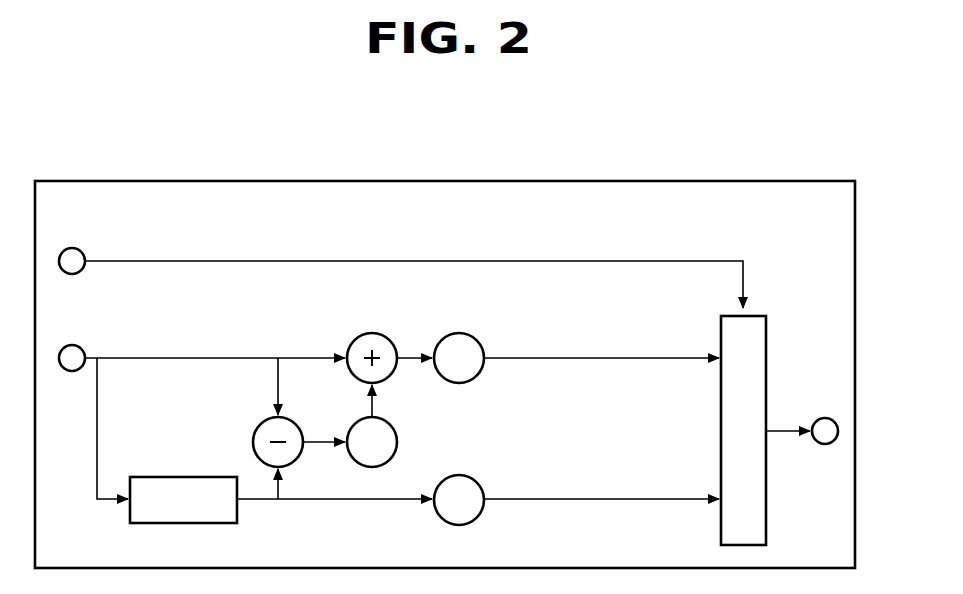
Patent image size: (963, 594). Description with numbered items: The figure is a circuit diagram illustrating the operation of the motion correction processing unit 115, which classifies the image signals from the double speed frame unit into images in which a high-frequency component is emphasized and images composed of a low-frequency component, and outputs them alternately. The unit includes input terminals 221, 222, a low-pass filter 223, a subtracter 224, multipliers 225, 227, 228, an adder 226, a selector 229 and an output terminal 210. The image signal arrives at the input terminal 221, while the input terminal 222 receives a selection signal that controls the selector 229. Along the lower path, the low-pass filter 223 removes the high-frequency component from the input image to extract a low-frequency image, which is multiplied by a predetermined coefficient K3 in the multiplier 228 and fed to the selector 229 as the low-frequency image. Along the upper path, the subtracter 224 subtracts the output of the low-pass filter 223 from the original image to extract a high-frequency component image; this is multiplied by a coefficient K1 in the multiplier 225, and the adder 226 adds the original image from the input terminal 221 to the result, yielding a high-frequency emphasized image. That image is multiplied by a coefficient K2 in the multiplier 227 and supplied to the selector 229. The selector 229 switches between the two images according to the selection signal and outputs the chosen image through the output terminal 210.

The motion correction processing unit 115 is at (826, 181).
The output terminal 210 is at (825, 418).
The input terminal 221 is at (72, 345).
The input terminal 222 is at (72, 248).
The low-pass filter 223 is at (155, 477).
The subtracter 224 is at (258, 425).
The multiplier 225 is at (418, 410).
The adder 226 is at (372, 333).
The multiplier 227 is at (459, 333).
The multiplier 228 is at (482, 486).
The selector 229 is at (766, 527).